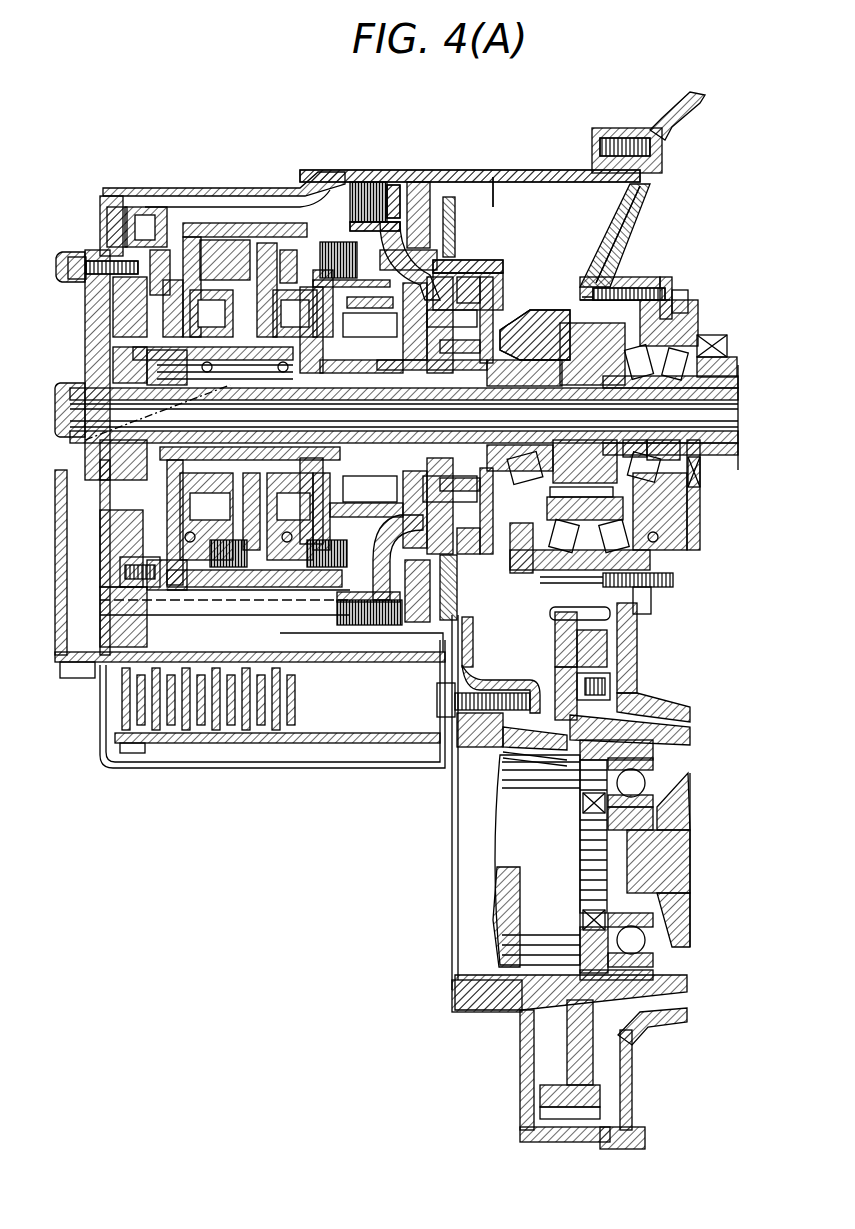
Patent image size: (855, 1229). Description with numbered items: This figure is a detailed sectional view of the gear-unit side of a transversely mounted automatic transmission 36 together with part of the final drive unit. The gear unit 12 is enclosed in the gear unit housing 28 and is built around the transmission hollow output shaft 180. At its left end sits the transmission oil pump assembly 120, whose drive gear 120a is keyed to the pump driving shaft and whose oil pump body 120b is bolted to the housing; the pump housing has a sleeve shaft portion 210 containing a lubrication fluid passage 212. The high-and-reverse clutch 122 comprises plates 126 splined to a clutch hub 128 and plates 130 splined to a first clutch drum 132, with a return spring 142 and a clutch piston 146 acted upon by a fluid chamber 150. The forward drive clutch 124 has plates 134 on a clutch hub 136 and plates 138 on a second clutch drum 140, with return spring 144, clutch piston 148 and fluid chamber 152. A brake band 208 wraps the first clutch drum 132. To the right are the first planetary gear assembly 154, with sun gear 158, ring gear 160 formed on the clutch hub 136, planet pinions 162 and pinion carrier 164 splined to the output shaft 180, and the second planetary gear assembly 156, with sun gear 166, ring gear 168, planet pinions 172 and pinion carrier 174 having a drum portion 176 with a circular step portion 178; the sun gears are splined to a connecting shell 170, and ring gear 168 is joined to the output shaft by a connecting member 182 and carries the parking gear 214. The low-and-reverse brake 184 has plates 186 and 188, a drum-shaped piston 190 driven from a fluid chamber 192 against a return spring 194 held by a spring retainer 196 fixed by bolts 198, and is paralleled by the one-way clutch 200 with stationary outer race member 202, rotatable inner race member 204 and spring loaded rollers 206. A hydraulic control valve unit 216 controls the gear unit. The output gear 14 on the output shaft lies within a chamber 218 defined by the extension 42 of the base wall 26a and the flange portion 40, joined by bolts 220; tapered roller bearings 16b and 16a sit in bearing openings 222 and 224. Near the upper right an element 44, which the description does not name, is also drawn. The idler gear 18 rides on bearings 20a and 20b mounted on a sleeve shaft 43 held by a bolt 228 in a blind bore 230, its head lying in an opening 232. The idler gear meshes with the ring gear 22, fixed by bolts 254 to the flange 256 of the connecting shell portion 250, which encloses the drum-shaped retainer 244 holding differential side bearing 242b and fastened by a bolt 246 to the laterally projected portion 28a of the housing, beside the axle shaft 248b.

The gear unit 12 is at (527, 190).
The output gear 14 is at (630, 282).
The tapered roller bearing 16a is at (733, 372).
The tapered roller bearing 16b is at (553, 470).
The idler gear 18 is at (617, 528).
The tapered roller bearing 20a is at (650, 556).
The tapered roller bearing 20b is at (553, 570).
The ring gear 22 is at (627, 633).
The base wall 26a is at (648, 182).
The gear unit housing 28 is at (293, 190).
The laterally projected portion 28a is at (520, 1048).
The transmission 36 is at (577, 122).
The flange portion 40 is at (660, 320).
The extension 42 is at (600, 285).
The sleeve shaft 43 is at (530, 590).
The bracket bolt 44 is at (615, 140).
The transmission oil pump assembly 120 is at (125, 335).
The drive gear 120a is at (80, 387).
The oil pump body 120b is at (130, 312).
The high-and-reverse clutch 122 is at (193, 240).
The forward drive clutch 124 is at (352, 200).
The plates 126 is at (213, 247).
The clutch hub 128 is at (273, 240).
The plates 130 is at (200, 240).
The first clutch drum 132 is at (233, 247).
The plates 134 is at (365, 215).
The clutch hub 136 is at (420, 195).
The plates 138 is at (356, 215).
The second clutch drum 140 is at (327, 180).
The return spring 142 is at (170, 300).
The return spring 144 is at (260, 220).
The clutch piston 146 is at (150, 203).
The clutch piston 148 is at (262, 247).
The fluid chamber 150 is at (157, 347).
The fluid chamber 152 is at (260, 257).
The first planetary gear assembly 154 is at (600, 180).
The second planetary gear assembly 156 is at (512, 260).
The sun gear 158 is at (449, 489).
The ring gear 160 is at (463, 227).
The planet pinions 162 is at (370, 489).
The pinion carrier 164 is at (370, 325).
The sun gear 166 is at (450, 315).
The ring gear 168 is at (537, 307).
The connecting shell 170 is at (457, 262).
The planet pinions 172 is at (482, 290).
The pinion carrier 174 is at (537, 300).
The drum portion 176 is at (420, 200).
The circular step portion 178 is at (480, 175).
The transmission hollow output shaft 180 is at (733, 413).
The connecting member 182 is at (603, 280).
The low-and-reverse brake 184 is at (380, 187).
The plates 186 is at (367, 180).
The plates 188 is at (347, 170).
The piston 190 is at (307, 177).
The fluid chamber 192 is at (123, 197).
The return spring 194 is at (140, 203).
The spring retainer 196 is at (137, 193).
The bolts 198 is at (95, 258).
The transmission one-way clutch 200 is at (445, 215).
The stationary outer race member 202 is at (440, 205).
The rotatable inner race member 204 is at (427, 253).
The spring loaded rollers 206 is at (430, 240).
The brake band 208 is at (253, 227).
The sleeve shaft portion 210 is at (167, 367).
The fluid passage 212 is at (85, 440).
The parking gear 214 is at (493, 205).
The hydraulic control valve unit 216 is at (115, 720).
The chamber 218 is at (627, 343).
The bolts 220 is at (683, 283).
The bearing opening 222 is at (610, 282).
The bearing opening 224 is at (727, 352).
The bolt 228 is at (650, 597).
The blind bore 230 is at (670, 590).
The opening 232 is at (520, 530).
The differential side bearing 242b is at (653, 940).
The drum-shaped retainer 244 is at (520, 1007).
The bolt 246 is at (437, 700).
The axle shaft 248b is at (507, 813).
The connecting shell portion 250 is at (677, 700).
The bolts 254 is at (508, 752).
The flange 256 is at (610, 667).